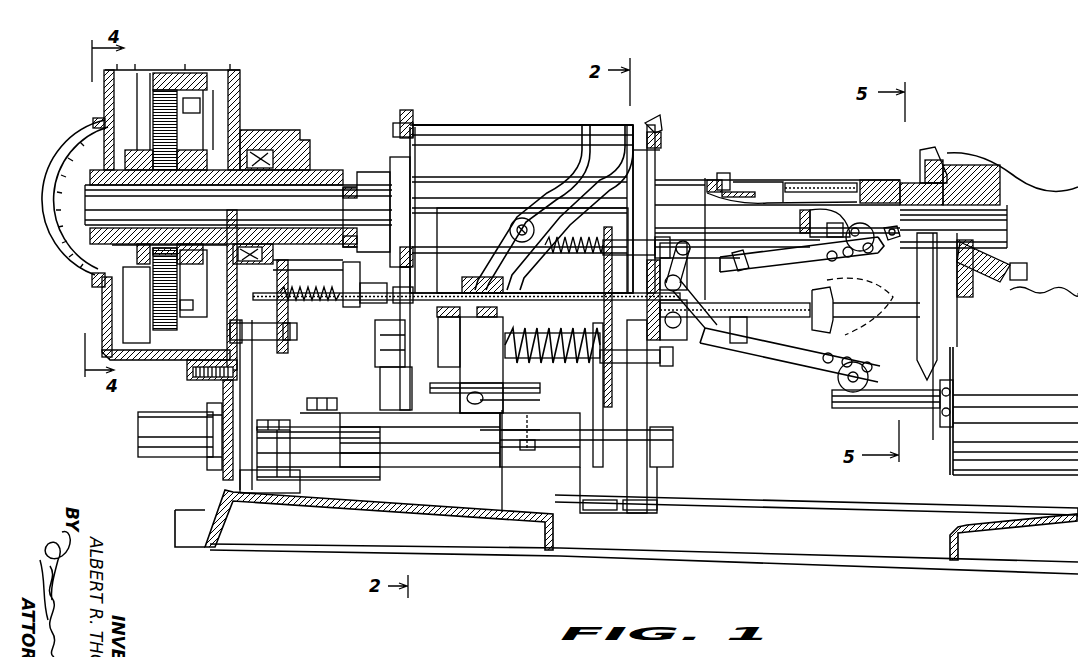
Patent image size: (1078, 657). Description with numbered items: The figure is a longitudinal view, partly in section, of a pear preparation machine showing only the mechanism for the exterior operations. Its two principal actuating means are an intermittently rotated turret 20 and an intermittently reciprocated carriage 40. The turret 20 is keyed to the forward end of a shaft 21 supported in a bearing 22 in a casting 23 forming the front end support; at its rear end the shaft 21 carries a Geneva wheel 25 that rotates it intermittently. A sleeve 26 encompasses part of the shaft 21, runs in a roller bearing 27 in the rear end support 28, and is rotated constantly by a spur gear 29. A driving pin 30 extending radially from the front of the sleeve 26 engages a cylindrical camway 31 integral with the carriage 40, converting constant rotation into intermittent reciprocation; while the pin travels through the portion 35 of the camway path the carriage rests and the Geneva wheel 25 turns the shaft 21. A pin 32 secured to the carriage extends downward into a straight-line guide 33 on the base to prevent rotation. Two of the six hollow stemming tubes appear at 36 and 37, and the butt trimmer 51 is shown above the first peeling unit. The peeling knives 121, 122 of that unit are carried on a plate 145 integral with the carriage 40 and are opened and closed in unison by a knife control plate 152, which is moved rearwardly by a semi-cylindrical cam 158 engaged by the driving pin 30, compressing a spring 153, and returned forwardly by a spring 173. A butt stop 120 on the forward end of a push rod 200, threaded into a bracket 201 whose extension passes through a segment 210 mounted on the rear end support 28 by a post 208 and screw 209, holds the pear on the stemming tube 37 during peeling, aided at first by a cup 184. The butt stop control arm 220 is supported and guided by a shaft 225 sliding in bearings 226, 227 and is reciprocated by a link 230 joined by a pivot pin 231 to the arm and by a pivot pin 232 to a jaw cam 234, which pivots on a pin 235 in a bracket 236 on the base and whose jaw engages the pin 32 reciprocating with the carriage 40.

The turret 20 is at (920, 160).
The shaft 21 is at (100, 200).
The bearing 22 is at (1015, 260).
The casting 23 is at (1030, 272).
The Geneva wheel 25 is at (127, 303).
The sleeve 26 is at (388, 175).
The roller bearing 27 is at (268, 150).
The rear end support 28 is at (236, 395).
The spur gear 29 is at (234, 130).
The driving pin 30 is at (540, 200).
The cylindrical camway 31 is at (566, 178).
The pin 32 is at (373, 413).
The straight-line guide 33 is at (463, 478).
The portion of the camway path 35 is at (588, 133).
The stemming tube 36 is at (890, 405).
The stemming tube 37 is at (920, 310).
The carriage 40 is at (655, 163).
The butt trimmer 51 is at (832, 232).
The butt stop 120 is at (843, 336).
The peeling knife 121 is at (884, 362).
The peeling knife 122 is at (888, 247).
The plate 145 is at (648, 410).
The knife control plate 152 is at (603, 395).
The spring 153 is at (597, 365).
The semi-cylindrical cam 158 is at (483, 236).
The spring 173 is at (592, 333).
The cup 184 is at (830, 280).
The push rod 200 is at (810, 320).
The bracket 201 is at (362, 305).
The post 208 is at (270, 342).
The screw 209 is at (297, 332).
The segment 210 is at (286, 350).
The butt stop control arm 220 is at (492, 356).
The shaft 225 is at (528, 458).
The bearing 226 is at (680, 440).
The bearing 227 is at (187, 447).
The link 230 is at (450, 410).
The pivot pin 231 is at (493, 430).
The pivot pin 232 is at (318, 398).
The jaw cam 234 is at (365, 450).
The pin 235 is at (273, 420).
The bracket 236 is at (275, 490).